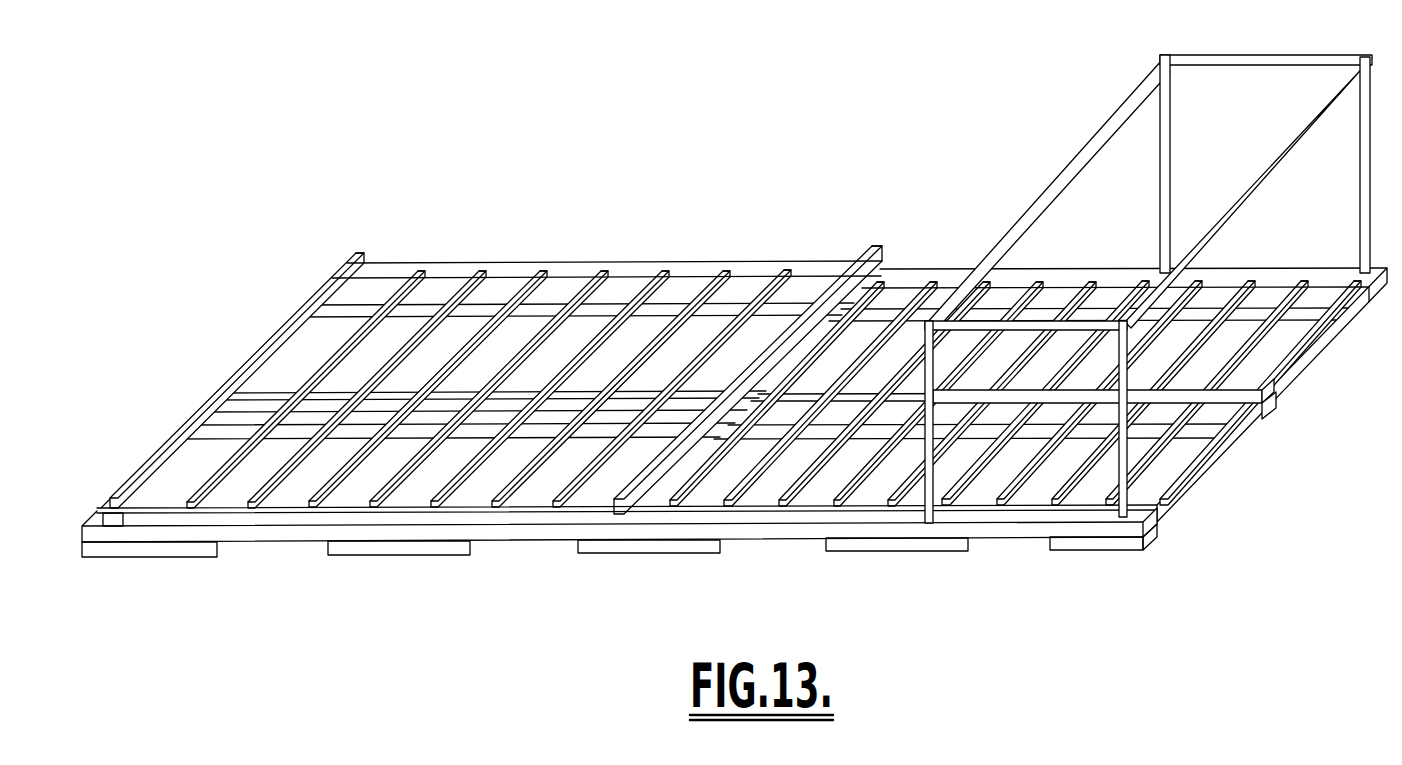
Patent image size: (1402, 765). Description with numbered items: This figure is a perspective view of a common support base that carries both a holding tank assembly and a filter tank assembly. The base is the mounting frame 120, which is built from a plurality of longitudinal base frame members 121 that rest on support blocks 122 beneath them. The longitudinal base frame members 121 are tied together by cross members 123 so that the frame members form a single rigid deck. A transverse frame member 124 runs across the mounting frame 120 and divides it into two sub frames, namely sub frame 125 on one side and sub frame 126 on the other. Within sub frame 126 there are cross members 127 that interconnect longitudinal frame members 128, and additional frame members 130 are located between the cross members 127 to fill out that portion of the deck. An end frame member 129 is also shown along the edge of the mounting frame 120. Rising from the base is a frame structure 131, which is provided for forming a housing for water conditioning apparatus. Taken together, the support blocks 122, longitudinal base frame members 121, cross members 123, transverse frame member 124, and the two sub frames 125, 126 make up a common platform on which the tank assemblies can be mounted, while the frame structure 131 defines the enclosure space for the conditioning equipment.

The mounting frame 120 is at (578, 612).
The longitudinal base frame member 121 is at (1363, 268).
The support block 122 is at (190, 547).
The cross member 123 is at (1033, 473).
The transverse frame member 124 is at (855, 262).
The sub frame 125 is at (1308, 386).
The sub frame 126 is at (628, 224).
The cross member 127 is at (713, 356).
The longitudinal frame member 128 is at (322, 392).
The end frame member 129 is at (350, 262).
The frame member 130 is at (450, 392).
The frame structure 131 is at (1090, 140).